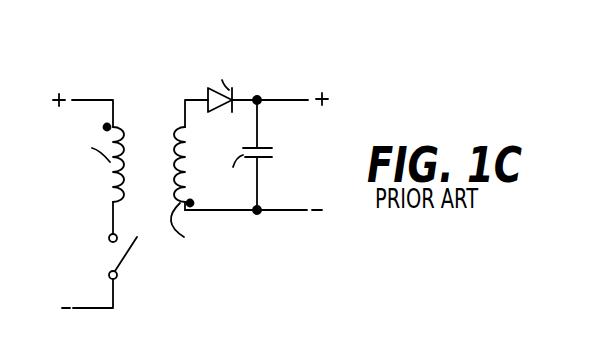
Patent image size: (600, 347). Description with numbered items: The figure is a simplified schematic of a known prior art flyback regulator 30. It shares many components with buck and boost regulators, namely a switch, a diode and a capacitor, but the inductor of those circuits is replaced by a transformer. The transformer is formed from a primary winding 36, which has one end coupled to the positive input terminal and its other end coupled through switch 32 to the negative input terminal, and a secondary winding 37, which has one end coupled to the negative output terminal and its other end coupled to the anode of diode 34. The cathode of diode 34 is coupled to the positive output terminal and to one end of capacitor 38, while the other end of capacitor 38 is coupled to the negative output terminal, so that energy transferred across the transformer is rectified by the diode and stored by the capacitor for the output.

The flyback regulator 30 is at (283, 241).
The switch 32 is at (127, 258).
The diode 34 is at (232, 97).
The primary winding 36 is at (123, 122).
The secondary winding 37 is at (177, 120).
The capacitor 38 is at (267, 167).